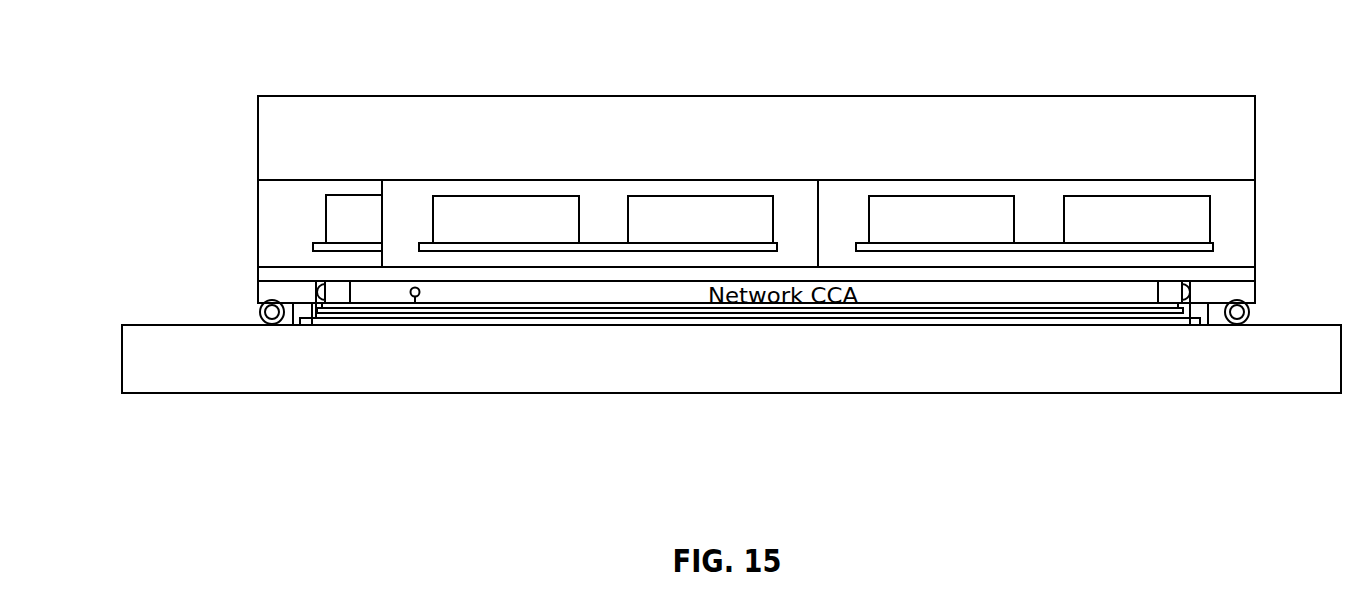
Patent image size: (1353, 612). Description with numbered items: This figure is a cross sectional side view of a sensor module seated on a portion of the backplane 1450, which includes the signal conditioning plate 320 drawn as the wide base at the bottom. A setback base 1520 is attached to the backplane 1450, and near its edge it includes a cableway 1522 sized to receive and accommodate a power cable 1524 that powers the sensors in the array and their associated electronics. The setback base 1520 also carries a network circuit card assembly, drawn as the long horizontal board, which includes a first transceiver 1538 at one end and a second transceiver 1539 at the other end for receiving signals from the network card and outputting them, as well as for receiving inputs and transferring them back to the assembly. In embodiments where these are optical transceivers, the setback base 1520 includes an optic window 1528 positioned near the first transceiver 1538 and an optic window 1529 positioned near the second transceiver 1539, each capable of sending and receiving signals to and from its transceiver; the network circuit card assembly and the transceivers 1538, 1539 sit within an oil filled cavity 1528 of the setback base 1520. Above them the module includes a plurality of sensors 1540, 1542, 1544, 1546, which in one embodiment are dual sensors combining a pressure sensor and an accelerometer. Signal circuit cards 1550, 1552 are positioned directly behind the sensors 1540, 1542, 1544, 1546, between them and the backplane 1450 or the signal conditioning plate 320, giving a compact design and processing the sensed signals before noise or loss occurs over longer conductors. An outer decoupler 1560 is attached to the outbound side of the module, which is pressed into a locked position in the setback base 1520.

The signal conditioning plate 320 is at (135, 362).
The backplane 1450 is at (148, 323).
The setback base 1520 is at (296, 324).
The cableway 1522 is at (287, 302).
The power cable 1524 is at (259, 308).
The optic window 1528 is at (286, 291).
The optic window 1529 is at (1243, 292).
The first transceiver 1538 is at (338, 295).
The second transceiver 1539 is at (1169, 295).
The sensor 1540 is at (487, 218).
The sensor 1542 is at (697, 205).
The sensor 1544 is at (930, 218).
The sensor 1546 is at (1135, 210).
The signal circuit card 1550 is at (602, 241).
The signal circuit card 1552 is at (1036, 241).
The outer decoupler 1560 is at (268, 128).